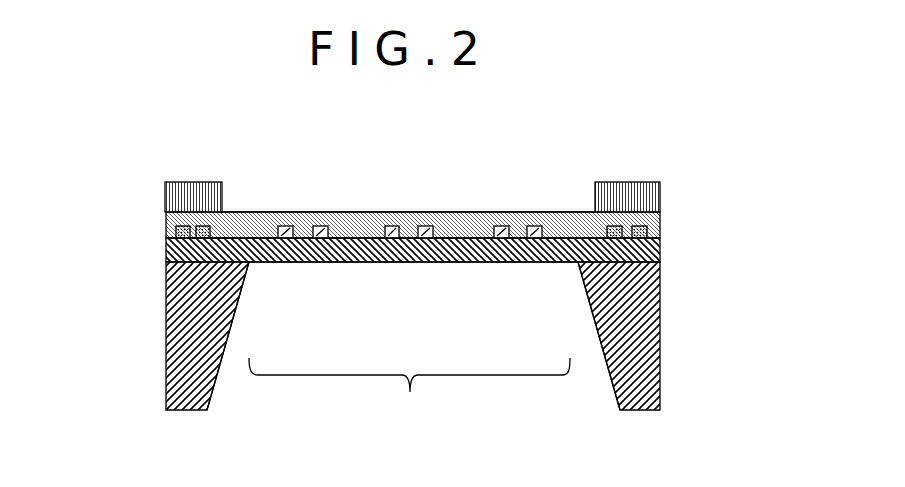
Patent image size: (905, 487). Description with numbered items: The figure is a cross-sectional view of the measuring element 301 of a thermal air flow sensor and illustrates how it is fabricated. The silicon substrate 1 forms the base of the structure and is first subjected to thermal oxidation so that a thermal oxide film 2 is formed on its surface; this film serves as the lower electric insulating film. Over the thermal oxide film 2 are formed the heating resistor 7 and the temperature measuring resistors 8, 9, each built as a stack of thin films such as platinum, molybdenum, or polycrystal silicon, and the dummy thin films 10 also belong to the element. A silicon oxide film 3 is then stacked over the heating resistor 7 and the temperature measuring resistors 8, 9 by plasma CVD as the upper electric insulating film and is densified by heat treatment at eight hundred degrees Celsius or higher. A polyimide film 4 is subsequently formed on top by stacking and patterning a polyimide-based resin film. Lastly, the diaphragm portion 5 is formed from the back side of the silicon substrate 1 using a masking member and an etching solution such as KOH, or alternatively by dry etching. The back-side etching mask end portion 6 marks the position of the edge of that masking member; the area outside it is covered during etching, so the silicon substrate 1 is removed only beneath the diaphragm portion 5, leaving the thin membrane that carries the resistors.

The measuring element 301 is at (250, 190).
The silicon substrate 1 is at (662, 317).
The thermal oxide film 2 is at (662, 242).
The silicon oxide film 3 is at (167, 223).
The polyimide film 4 is at (168, 202).
The diaphragm portion 5 is at (409, 391).
The back-side etching mask end portion 6 is at (620, 410).
The heating resistor 7 is at (385, 265).
The temperature measuring resistor 8 is at (289, 231).
The temperature measuring resistor 9 is at (495, 265).
The dummy thin film 10 is at (167, 250).